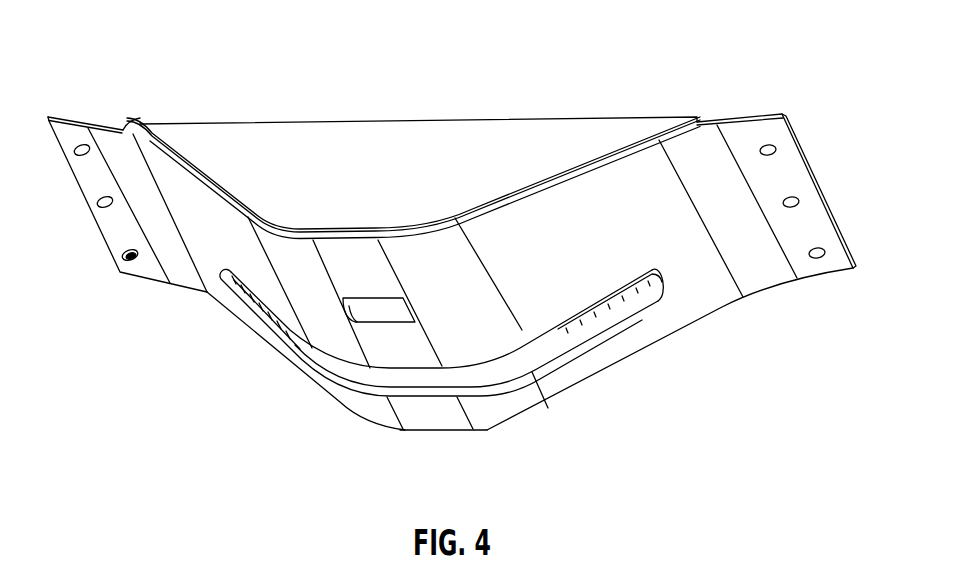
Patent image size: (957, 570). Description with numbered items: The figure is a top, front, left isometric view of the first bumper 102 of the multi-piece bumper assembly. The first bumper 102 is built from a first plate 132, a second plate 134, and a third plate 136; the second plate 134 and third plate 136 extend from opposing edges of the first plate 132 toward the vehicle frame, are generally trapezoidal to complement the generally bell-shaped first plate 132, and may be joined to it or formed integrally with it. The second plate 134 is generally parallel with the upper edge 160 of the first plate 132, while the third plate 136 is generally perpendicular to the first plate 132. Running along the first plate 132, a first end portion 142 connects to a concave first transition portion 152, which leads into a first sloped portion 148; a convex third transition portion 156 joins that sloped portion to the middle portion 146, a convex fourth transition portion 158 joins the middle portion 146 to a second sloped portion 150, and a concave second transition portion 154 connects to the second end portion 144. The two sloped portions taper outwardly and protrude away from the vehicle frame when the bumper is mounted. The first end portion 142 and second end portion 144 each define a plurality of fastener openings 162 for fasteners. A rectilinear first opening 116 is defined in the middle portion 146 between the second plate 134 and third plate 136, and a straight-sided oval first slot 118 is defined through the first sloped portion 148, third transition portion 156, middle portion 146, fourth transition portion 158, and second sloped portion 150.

The first bumper 102 is at (147, 30).
The first opening 116 is at (380, 312).
The first slot 118 is at (507, 357).
The first plate 132 is at (688, 311).
The second plate 134 is at (413, 133).
The third plate 136 is at (622, 294).
The first end portion 142 is at (77, 137).
The second end portion 144 is at (786, 145).
The middle portion 146 is at (440, 423).
The first sloped portion 148 is at (190, 197).
The second sloped portion 150 is at (643, 178).
The first transition portion 152 is at (130, 155).
The second transition portion 154 is at (718, 145).
The third transition portion 156 is at (350, 407).
The fourth transition portion 158 is at (490, 417).
The upper edge 160 is at (542, 188).
The fastener openings 162 is at (120, 263).